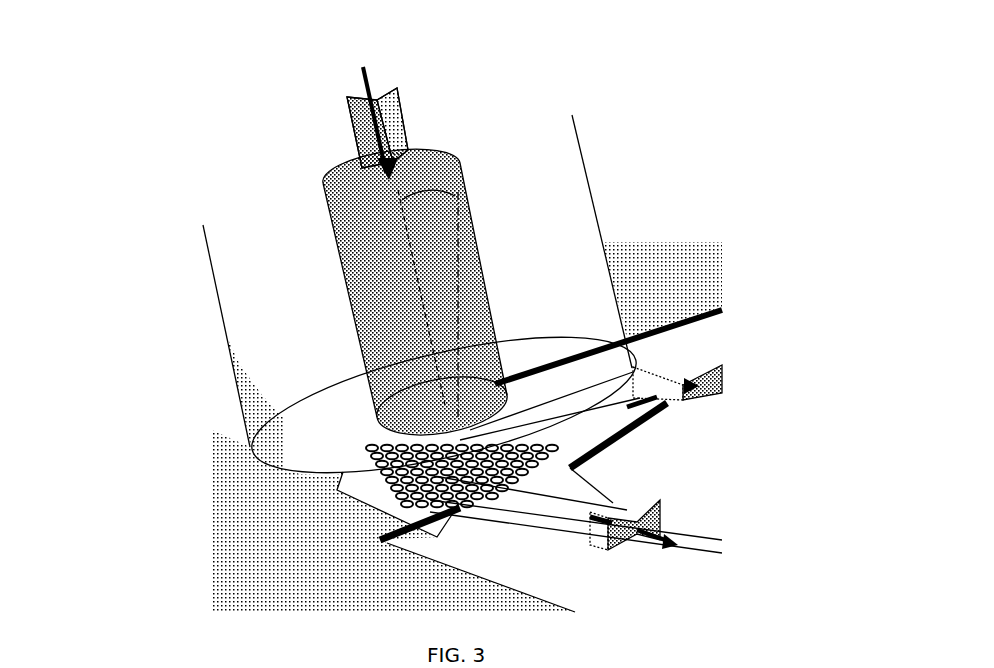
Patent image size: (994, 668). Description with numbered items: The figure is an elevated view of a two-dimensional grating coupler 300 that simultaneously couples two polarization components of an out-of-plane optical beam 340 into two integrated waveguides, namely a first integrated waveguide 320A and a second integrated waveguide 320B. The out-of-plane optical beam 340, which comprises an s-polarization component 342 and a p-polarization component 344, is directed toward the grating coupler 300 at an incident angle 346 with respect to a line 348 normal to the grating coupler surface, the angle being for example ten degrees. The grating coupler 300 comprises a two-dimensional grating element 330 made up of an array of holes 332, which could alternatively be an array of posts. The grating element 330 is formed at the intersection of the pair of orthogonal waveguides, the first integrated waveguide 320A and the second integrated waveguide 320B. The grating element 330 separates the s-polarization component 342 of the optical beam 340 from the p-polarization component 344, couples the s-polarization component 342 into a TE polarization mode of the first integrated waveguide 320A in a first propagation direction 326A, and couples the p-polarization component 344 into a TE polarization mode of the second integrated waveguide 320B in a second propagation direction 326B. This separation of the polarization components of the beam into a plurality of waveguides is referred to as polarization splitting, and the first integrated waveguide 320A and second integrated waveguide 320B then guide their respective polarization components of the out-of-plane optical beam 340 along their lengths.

The 2D grating coupler 300 is at (138, 39).
The first integrated waveguide 320A is at (560, 517).
The second integrated waveguide 320B is at (613, 427).
The first propagation direction 326A is at (656, 540).
The second propagation direction 326B is at (700, 388).
The 2D grating element 330 is at (387, 515).
The array of holes 332 is at (493, 497).
The out-of-plane optical beam 340 is at (365, 70).
The s-polarization component 342 is at (397, 90).
The p-polarization component 344 is at (347, 102).
The incident angle 346 is at (427, 207).
The line normal to the grating coupler surface 348 is at (457, 245).